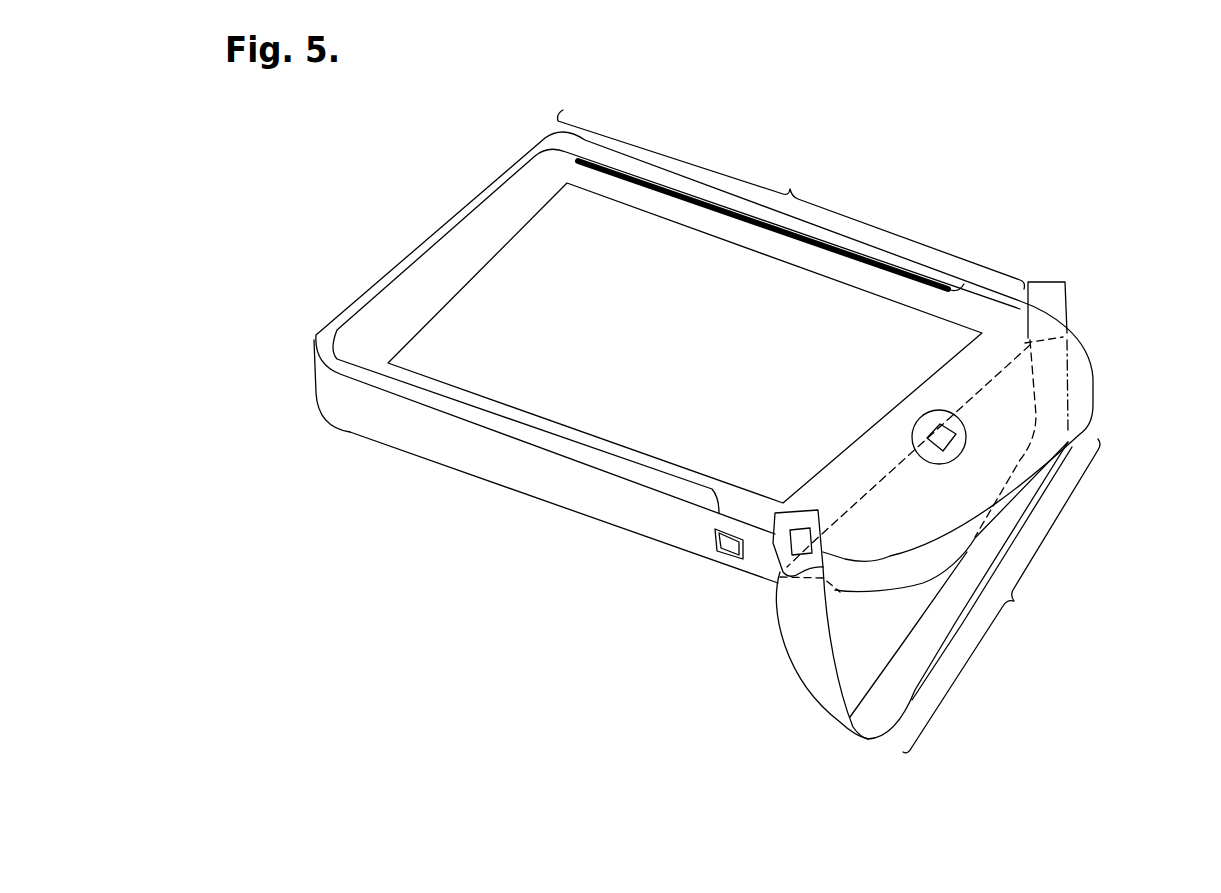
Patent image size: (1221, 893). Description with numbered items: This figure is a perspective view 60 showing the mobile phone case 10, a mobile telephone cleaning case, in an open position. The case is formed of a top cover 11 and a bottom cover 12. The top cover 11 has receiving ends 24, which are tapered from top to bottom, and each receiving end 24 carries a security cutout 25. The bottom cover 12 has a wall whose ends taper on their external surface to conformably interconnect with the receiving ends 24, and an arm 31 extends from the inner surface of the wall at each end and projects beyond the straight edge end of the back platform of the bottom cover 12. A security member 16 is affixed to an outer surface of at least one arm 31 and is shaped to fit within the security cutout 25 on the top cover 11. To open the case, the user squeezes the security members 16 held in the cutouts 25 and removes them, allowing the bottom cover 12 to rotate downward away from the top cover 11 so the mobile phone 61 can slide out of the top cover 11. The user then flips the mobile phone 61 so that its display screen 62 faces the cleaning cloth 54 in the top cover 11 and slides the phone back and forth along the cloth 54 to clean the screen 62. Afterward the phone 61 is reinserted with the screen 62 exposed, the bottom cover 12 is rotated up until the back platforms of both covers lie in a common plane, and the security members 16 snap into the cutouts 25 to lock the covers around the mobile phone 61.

The mobile phone case 10 is at (851, 153).
The top cover 11 is at (791, 199).
The bottom cover 12 is at (1001, 596).
The security member 16 is at (778, 580).
The receiving end 24 is at (740, 573).
The security cutout 25 is at (716, 553).
The arm 31 is at (1050, 282).
The cleaning cloth 54 is at (851, 637).
The perspective view 60 is at (329, 101).
The mobile phone 61 is at (1093, 346).
The display screen 62 is at (443, 382).